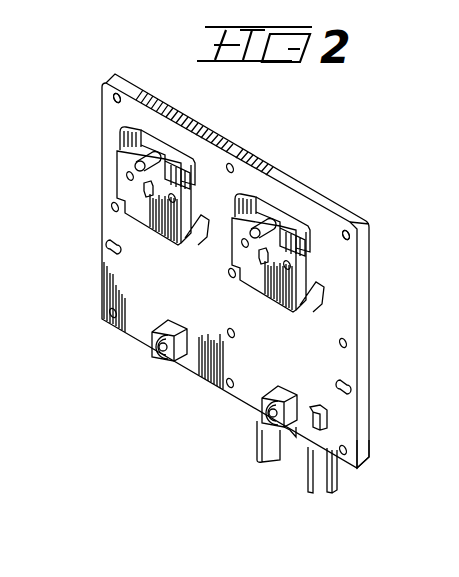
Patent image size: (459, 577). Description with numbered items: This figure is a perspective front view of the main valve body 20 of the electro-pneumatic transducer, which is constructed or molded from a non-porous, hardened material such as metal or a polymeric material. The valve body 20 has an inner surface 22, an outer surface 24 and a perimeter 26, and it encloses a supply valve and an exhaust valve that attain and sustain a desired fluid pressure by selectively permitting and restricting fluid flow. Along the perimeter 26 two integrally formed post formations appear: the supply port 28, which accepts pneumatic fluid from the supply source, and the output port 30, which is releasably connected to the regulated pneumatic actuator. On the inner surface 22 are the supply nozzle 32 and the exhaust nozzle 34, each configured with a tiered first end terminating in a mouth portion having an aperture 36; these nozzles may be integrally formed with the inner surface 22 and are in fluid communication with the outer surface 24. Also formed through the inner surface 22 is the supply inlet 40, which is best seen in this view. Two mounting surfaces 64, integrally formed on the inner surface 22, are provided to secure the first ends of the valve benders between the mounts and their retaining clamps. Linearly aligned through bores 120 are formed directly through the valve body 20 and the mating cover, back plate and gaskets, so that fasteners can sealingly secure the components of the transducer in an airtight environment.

The main valve body 20 is at (93, 295).
The inner surface 22 is at (351, 286).
The outer surface 24 is at (368, 313).
The perimeter 26 is at (363, 363).
The supply port 28 is at (333, 490).
The output port 30 is at (268, 457).
The supply nozzle 32 is at (287, 428).
The exhaust nozzle 34 is at (173, 361).
The aperture 36 is at (160, 347).
The supply inlet 40 is at (323, 411).
The mounting surface 64 is at (170, 180).
The through bores 120 is at (112, 98).